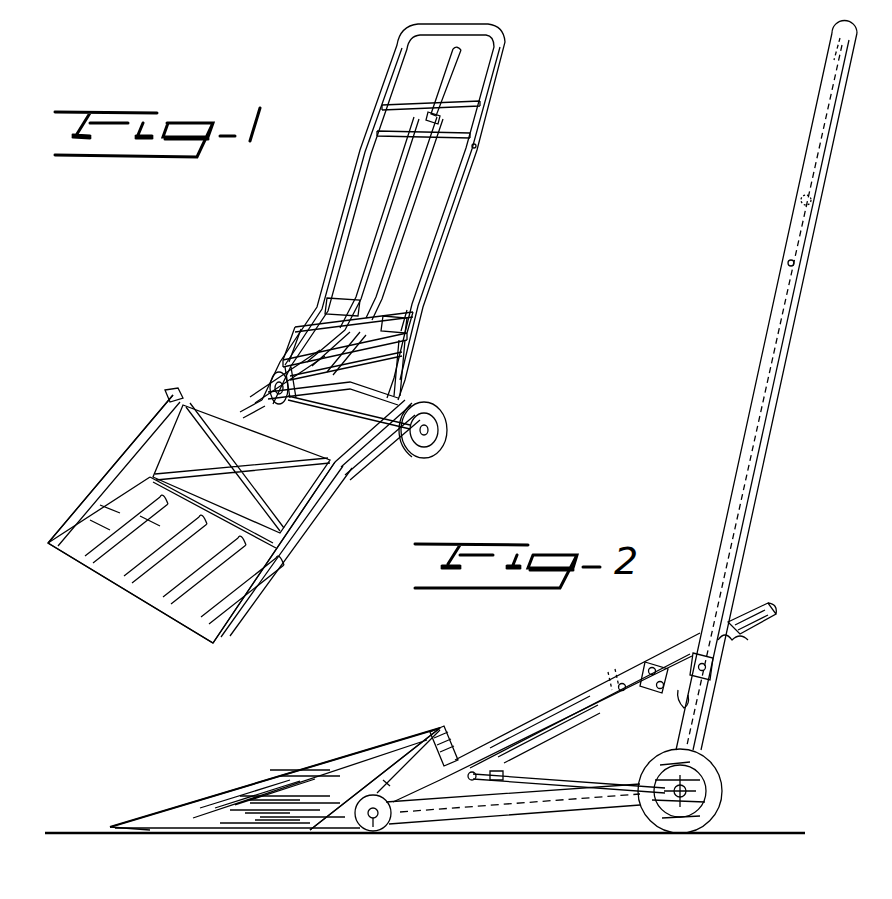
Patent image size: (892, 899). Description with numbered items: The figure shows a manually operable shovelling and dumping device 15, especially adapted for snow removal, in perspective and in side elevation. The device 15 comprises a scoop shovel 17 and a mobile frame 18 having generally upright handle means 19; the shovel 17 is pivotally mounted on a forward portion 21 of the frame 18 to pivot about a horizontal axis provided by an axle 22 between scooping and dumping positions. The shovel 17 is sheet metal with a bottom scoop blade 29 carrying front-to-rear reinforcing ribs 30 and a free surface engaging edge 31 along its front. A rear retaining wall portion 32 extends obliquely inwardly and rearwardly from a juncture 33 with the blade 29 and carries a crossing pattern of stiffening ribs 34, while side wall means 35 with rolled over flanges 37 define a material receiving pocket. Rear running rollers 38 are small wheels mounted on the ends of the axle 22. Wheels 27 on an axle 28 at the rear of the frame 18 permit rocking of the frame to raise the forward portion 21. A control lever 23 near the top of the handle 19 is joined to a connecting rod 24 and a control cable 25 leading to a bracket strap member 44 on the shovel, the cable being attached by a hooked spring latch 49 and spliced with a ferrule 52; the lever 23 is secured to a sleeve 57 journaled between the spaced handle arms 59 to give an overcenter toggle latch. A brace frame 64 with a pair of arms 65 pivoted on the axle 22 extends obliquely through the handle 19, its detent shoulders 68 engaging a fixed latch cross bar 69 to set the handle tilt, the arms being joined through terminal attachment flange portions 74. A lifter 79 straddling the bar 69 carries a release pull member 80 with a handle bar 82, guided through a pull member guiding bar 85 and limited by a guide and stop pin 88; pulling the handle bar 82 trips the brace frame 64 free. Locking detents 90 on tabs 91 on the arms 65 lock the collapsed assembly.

In FIG. 1, the shovelling and dumping device 15 is at (293, 294).
In FIG. 2, the shovelling and dumping device 15 is at (808, 414).
In FIG. 1, the scoop shovel 17 is at (110, 480).
In FIG. 2, the scoop shovel 17 is at (322, 822).
In FIG. 1, the mobile frame 18 is at (387, 453).
In FIG. 2, the mobile frame 18 is at (610, 822).
In FIG. 1, the handle means 19 is at (516, 84).
In FIG. 2, the handle means 19 is at (780, 234).
In FIG. 1, the forward portion of the frame 21 is at (252, 408).
In FIG. 2, the forward portion of the frame 21 is at (535, 810).
In FIG. 2, the axle 22 is at (370, 831).
In FIG. 1, the control lever 23 is at (460, 56).
In FIG. 2, the control lever 23 is at (830, 72).
In FIG. 1, the connecting rod 24 is at (390, 244).
In FIG. 2, the connecting rod 24 is at (786, 340).
In FIG. 1, the control cable 25 is at (333, 404).
In FIG. 2, the control cable 25 is at (560, 778).
In FIG. 1, the wheels 27 is at (434, 448).
In FIG. 2, the wheels 27 is at (712, 784).
In FIG. 1, the axle 28 is at (396, 406).
In FIG. 2, the axle 28 is at (688, 792).
In FIG. 1, the bottom scoop blade 29 is at (160, 605).
In FIG. 2, the bottom scoop blade 29 is at (276, 833).
In FIG. 1, the reinforcing ribs 30 is at (206, 566).
In FIG. 1, the surface engaging edge 31 is at (188, 630).
In FIG. 2, the surface engaging edge 31 is at (112, 826).
In FIG. 1, the rear retaining wall portion 32 is at (176, 390).
In FIG. 2, the rear retaining wall portion 32 is at (383, 778).
In FIG. 1, the juncture 33 is at (225, 500).
In FIG. 1, the stiffening ribs 34 is at (210, 445).
In FIG. 1, the side wall means 35 is at (130, 450).
In FIG. 2, the side wall means 35 is at (340, 783).
In FIG. 1, the flanges 37 is at (160, 418).
In FIG. 2, the flanges 37 is at (292, 775).
In FIG. 2, the rear running rollers 38 is at (390, 820).
In FIG. 2, the bracket strap member 44 is at (452, 752).
In FIG. 2, the hooked spring latch 49 is at (471, 782).
In FIG. 2, the ferrule 52 is at (505, 774).
In FIG. 1, the sleeve 57 is at (400, 105).
In FIG. 1, the handle arms 59 is at (350, 200).
In FIG. 2, the handle arms 59 is at (786, 289).
In FIG. 1, the brace frame 64 is at (274, 349).
In FIG. 2, the brace frame 64 is at (518, 723).
In FIG. 1, the brace frame arms 65 is at (236, 395).
In FIG. 2, the brace frame arms 65 is at (546, 722).
In FIG. 2, the detent shoulders 68 is at (745, 643).
In FIG. 1, the latch cross bar 69 is at (409, 338).
In FIG. 2, the latch cross bar 69 is at (703, 648).
In FIG. 1, the terminal attachment flange portions 74 is at (362, 304).
In FIG. 1, the lifter 79 is at (312, 326).
In FIG. 2, the lifter 79 is at (700, 700).
In FIG. 1, the release pull member 80 is at (350, 278).
In FIG. 1, the handle bar 82 is at (441, 86).
In FIG. 1, the pull member guiding bar 85 is at (460, 137).
In FIG. 1, the guide and stop pin 88 is at (392, 352).
In FIG. 2, the locking detents 90 is at (664, 700).
In FIG. 2, the tabs 91 is at (660, 668).